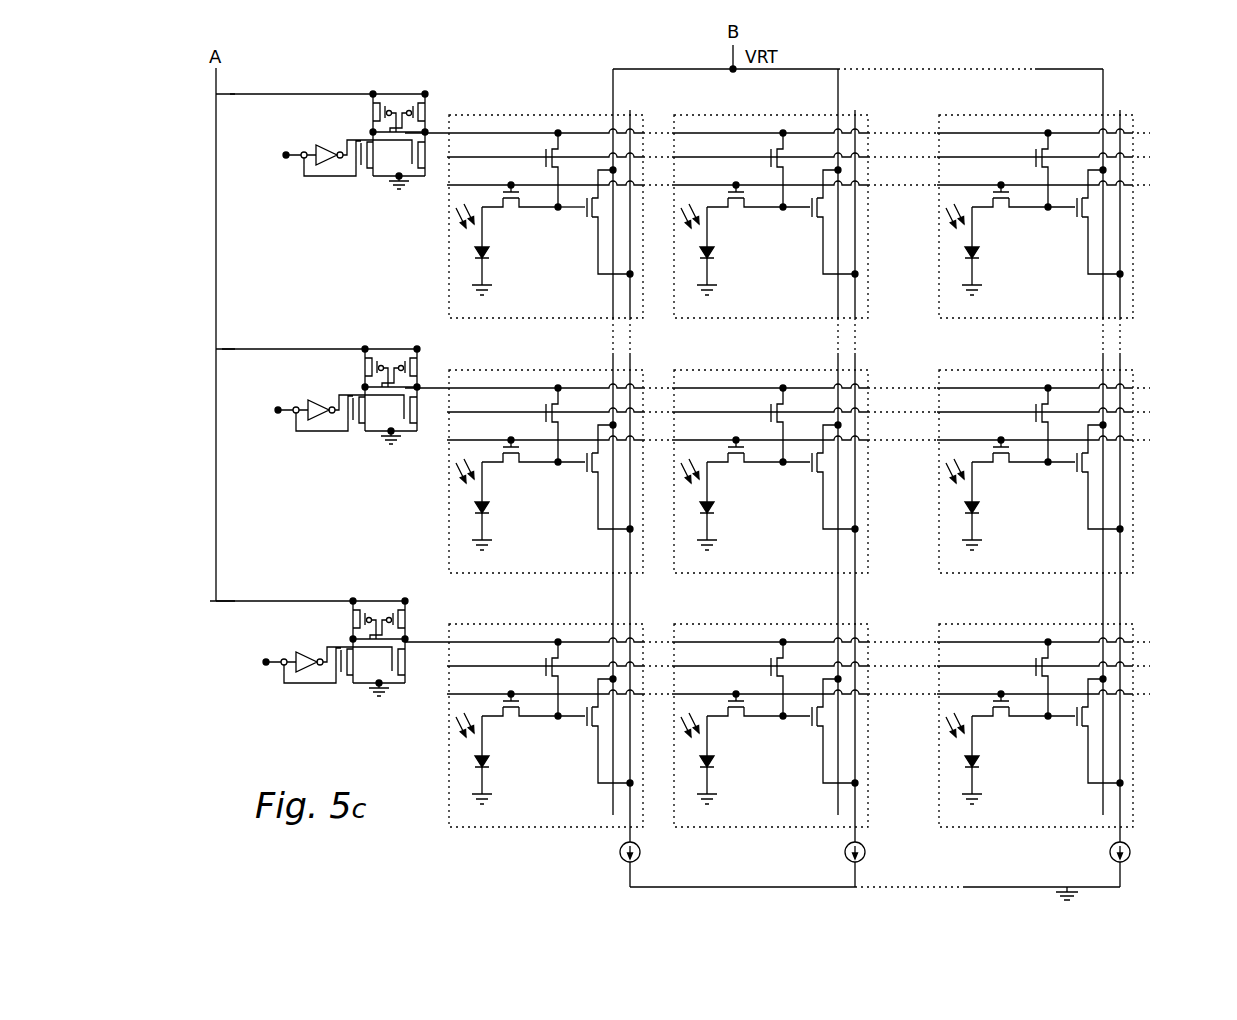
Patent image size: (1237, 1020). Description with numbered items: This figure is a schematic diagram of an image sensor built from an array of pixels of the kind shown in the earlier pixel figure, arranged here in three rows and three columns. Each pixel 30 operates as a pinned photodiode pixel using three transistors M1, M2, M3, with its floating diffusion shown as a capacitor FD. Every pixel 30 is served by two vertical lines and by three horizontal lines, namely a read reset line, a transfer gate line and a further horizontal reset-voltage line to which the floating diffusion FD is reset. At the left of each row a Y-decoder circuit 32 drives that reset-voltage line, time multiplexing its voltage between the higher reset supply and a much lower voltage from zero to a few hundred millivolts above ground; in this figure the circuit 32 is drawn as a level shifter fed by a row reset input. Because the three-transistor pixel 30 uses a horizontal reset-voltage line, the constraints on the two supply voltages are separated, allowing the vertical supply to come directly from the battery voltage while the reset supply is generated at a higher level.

The pixel 30 is at (540, 125).
The Y-decoder circuit 32 is at (357, 192).
The transistor M1 is at (520, 208).
The transistor M2 is at (538, 168).
The transistor M3 is at (596, 222).
The floating diffusion FD is at (565, 219).